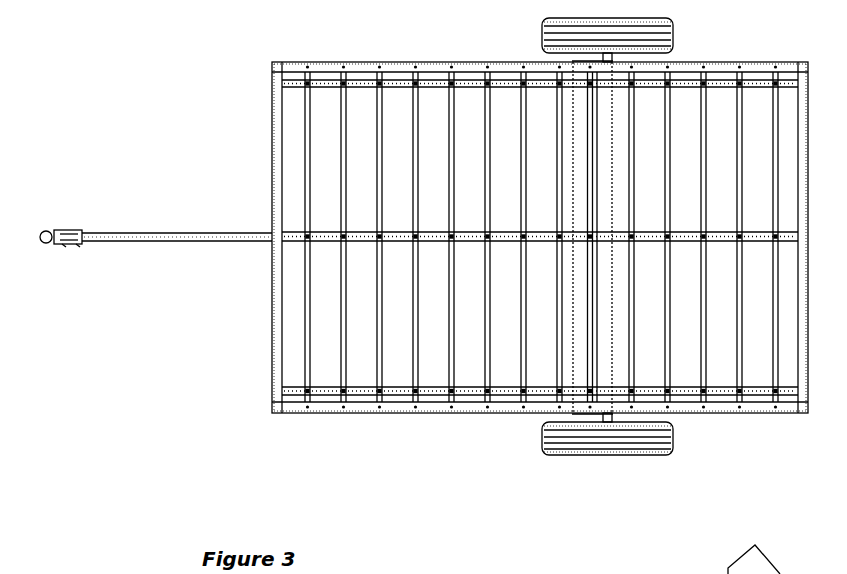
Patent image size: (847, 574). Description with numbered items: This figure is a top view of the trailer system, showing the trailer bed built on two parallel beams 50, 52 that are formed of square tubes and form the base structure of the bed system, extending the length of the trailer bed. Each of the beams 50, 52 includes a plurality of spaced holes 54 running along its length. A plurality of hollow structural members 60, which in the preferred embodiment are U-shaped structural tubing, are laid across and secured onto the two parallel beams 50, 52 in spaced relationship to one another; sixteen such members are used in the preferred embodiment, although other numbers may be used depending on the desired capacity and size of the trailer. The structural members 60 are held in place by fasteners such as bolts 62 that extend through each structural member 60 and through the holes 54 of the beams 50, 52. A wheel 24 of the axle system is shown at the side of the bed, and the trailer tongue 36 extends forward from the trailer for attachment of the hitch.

The wheel 24 is at (560, 455).
The trailer tongue 36 is at (123, 247).
The parallel beam 50 is at (262, 84).
The parallel beam 52 is at (258, 398).
The spaced holes 54 is at (288, 88).
The hollow structural member 60 is at (382, 413).
The bolt 62 is at (303, 388).